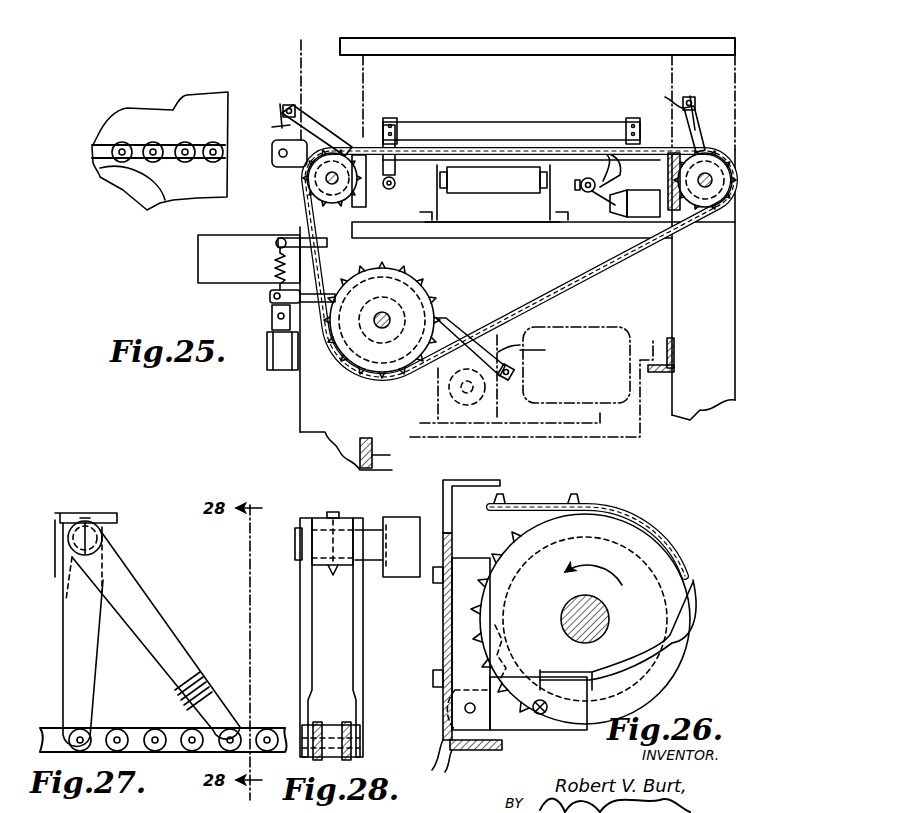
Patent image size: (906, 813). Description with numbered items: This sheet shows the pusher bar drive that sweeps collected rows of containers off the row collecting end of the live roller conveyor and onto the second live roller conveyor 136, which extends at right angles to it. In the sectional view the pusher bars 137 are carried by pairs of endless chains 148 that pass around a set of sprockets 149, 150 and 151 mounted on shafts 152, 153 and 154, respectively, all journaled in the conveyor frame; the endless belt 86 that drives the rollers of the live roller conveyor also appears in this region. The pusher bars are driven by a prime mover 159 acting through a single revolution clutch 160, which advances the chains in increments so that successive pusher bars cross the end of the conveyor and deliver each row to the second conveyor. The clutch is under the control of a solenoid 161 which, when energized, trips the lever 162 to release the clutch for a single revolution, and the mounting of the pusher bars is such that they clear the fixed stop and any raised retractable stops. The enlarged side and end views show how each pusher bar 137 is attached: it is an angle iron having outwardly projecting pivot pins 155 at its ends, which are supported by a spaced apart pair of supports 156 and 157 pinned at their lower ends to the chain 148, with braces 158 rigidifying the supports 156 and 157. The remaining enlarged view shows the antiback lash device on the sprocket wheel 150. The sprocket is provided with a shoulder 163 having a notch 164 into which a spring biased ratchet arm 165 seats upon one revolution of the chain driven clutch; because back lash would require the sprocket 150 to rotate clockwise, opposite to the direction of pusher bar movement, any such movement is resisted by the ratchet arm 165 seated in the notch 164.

In FIG. 25, the endless belt 86 is at (505, 190).
In FIG. 25, the second live roller conveyor 136 is at (160, 142).
In FIG. 25, the pusher bar 137 is at (283, 108).
In FIG. 27, the pusher bar 137 is at (108, 515).
In FIG. 28, the pusher bar 137 is at (390, 518).
In FIG. 25, the endless chain 148 is at (595, 274).
In FIG. 27, the endless chain 148 is at (115, 737).
In FIG. 28, the endless chain 148 is at (330, 733).
In FIG. 26, the endless chain 148 is at (640, 514).
In FIG. 25, the sprocket 149 is at (406, 320).
In FIG. 25, the sprocket wheel 150 is at (723, 172).
In FIG. 26, the sprocket wheel 150 is at (665, 560).
In FIG. 25, the sprocket 151 is at (310, 181).
In FIG. 25, the shaft 152 is at (392, 321).
In FIG. 25, the shaft 153 is at (712, 183).
In FIG. 25, the shaft 154 is at (326, 179).
In FIG. 28, the pivot pin 155 is at (372, 535).
In FIG. 25, the support 156 is at (467, 222).
In FIG. 27, the support 156 is at (72, 650).
In FIG. 28, the support 156 is at (300, 640).
In FIG. 28, the support 157 is at (364, 640).
In FIG. 25, the brace 158 is at (310, 128).
In FIG. 27, the brace 158 is at (168, 627).
In FIG. 25, the prime mover 159 is at (598, 332).
In FIG. 25, the single revolution clutch 160 is at (410, 300).
In FIG. 25, the solenoid 161 is at (287, 372).
In FIG. 25, the lever 162 is at (345, 292).
In FIG. 26, the shoulder 163 is at (672, 646).
In FIG. 26, the notch 164 is at (588, 680).
In FIG. 26, the ratchet arm 165 is at (580, 712).